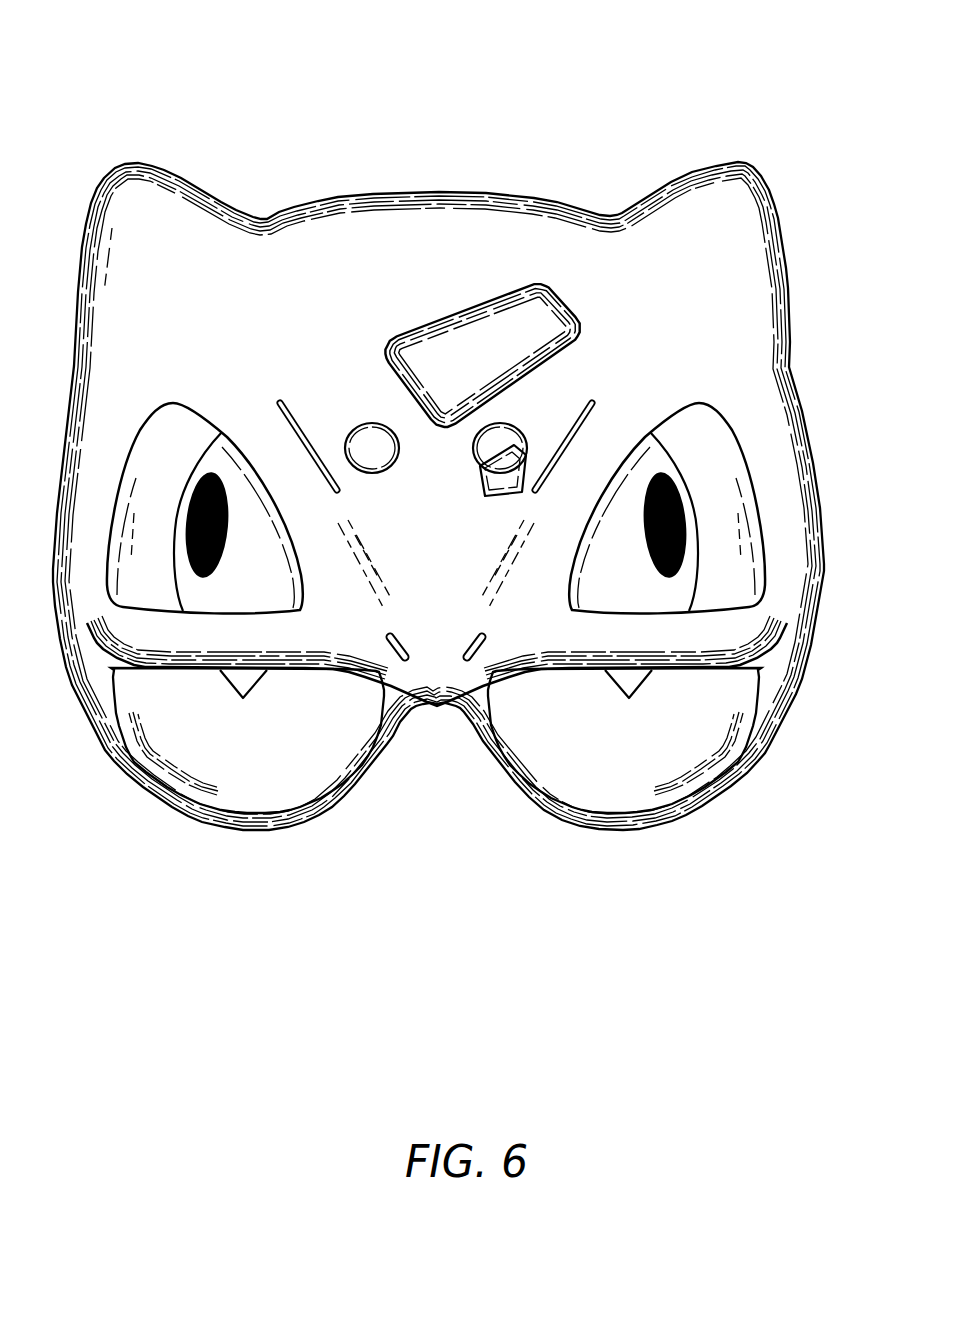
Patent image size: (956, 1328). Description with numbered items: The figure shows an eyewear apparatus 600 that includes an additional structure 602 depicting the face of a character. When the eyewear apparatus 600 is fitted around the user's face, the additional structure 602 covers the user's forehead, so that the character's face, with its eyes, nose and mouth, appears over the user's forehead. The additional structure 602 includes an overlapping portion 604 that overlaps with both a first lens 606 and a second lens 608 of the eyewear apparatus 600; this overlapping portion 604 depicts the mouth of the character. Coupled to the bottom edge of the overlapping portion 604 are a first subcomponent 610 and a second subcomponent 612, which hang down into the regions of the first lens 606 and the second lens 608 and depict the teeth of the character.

The eyewear apparatus 600 is at (128, 44).
The additional structure 602 is at (456, 287).
The overlapping portion 604 is at (321, 663).
The first lens 606 is at (264, 757).
The second lens 608 is at (643, 757).
The first subcomponent 610 is at (240, 677).
The second subcomponent 612 is at (630, 678).